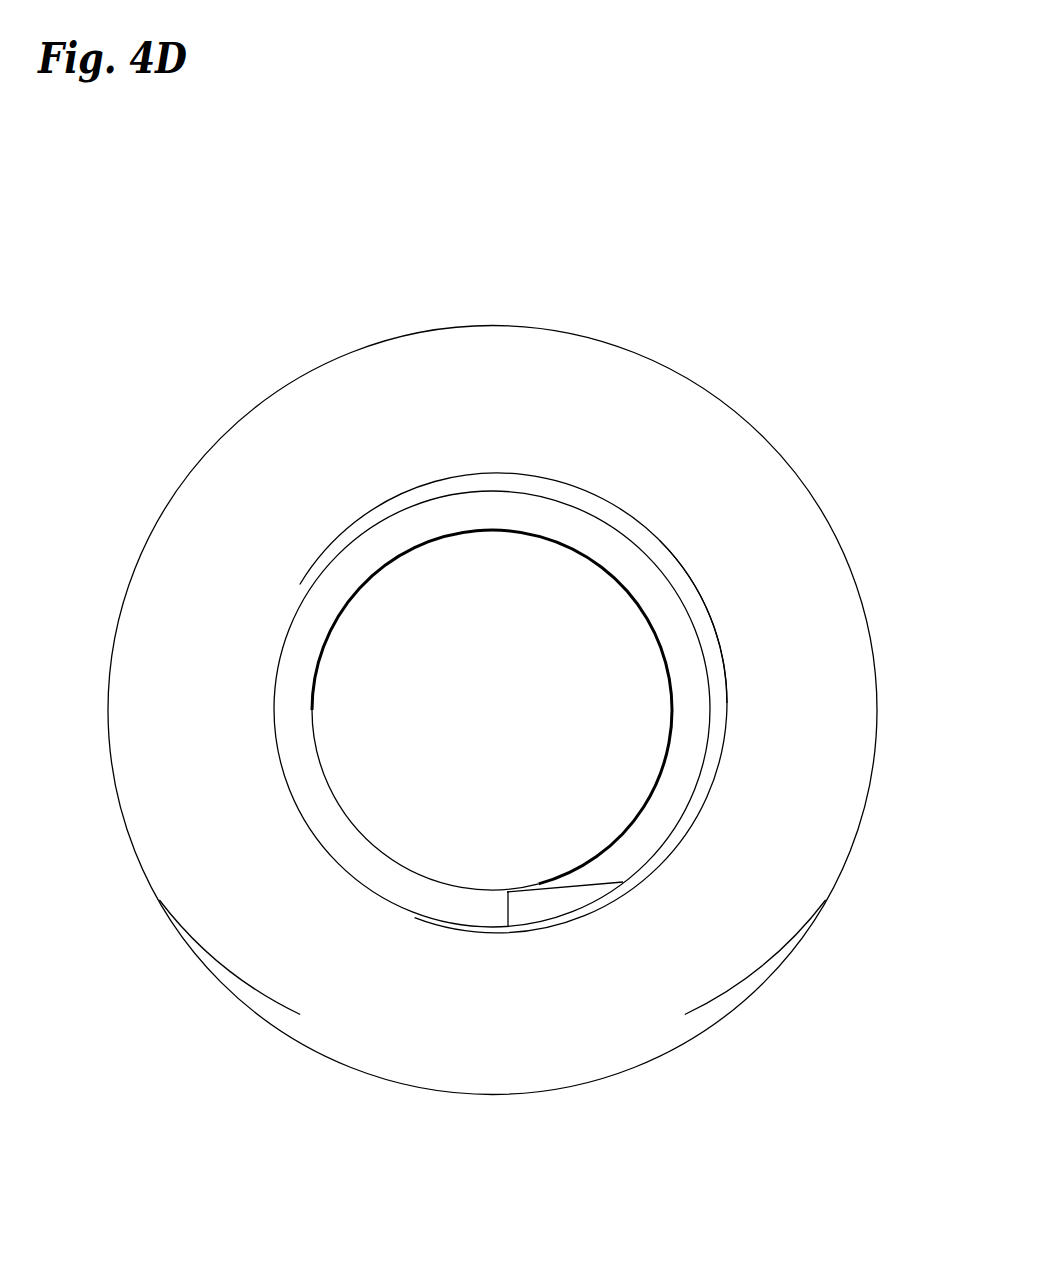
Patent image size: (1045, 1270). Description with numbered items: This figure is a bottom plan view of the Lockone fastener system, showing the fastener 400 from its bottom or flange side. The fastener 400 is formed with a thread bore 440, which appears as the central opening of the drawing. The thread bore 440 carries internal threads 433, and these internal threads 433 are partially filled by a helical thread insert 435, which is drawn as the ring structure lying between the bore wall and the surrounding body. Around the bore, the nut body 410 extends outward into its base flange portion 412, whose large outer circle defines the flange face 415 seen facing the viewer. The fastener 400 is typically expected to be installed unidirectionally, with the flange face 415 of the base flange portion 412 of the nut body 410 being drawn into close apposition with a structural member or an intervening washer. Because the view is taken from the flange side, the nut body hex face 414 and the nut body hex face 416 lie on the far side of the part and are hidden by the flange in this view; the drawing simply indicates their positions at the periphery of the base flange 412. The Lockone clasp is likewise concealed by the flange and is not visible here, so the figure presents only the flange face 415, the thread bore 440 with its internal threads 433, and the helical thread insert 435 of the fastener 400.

The fastener 400 is at (745, 97).
The nut body 410 is at (308, 327).
The base flange 412 is at (168, 780).
The nut body hex face 414 is at (822, 953).
The flange face 415 is at (732, 505).
The nut body hex face 416 is at (223, 1012).
The internal threads 433 is at (710, 623).
The helical thread insert 435 is at (300, 773).
The thread bore 440 is at (523, 607).